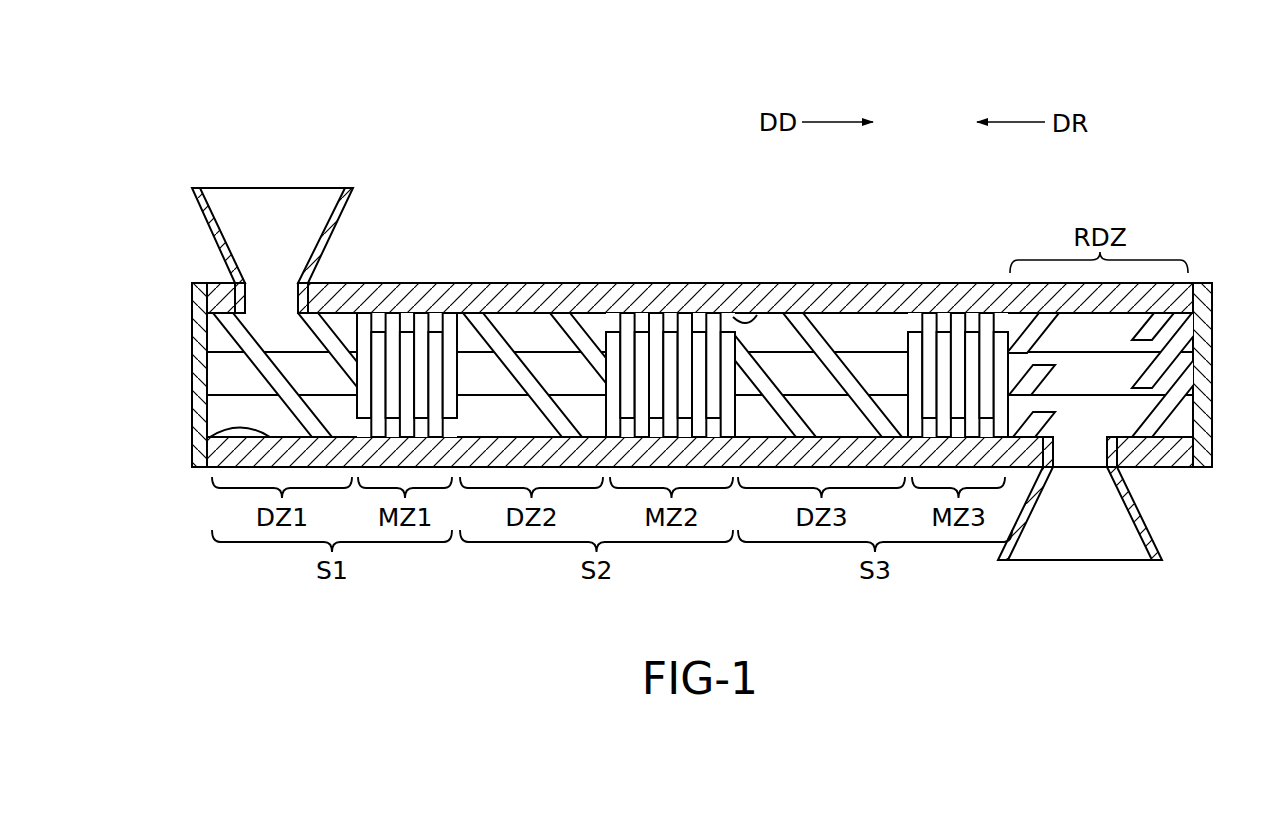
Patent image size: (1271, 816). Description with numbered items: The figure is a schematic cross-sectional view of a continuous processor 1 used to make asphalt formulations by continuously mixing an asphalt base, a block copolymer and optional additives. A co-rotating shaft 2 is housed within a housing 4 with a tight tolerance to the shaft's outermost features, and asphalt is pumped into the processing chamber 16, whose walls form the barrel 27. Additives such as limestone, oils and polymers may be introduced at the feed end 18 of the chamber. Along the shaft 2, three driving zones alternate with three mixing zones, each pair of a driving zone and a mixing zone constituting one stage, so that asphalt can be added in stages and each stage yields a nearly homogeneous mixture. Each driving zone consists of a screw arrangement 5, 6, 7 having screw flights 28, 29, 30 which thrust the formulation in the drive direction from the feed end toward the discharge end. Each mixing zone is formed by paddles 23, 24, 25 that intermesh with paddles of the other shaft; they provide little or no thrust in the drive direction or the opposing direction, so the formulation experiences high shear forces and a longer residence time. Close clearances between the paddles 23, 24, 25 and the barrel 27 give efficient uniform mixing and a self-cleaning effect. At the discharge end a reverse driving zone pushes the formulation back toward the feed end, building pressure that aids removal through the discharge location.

The continuous processor 1 is at (634, 188).
The co-rotating shaft 2 is at (221, 371).
The housing 4 is at (452, 292).
The screw arrangement 5 is at (300, 363).
The screw arrangement 6 is at (550, 372).
The screw arrangement 7 is at (798, 373).
The processing chamber 16 is at (235, 410).
The feed end 18 is at (257, 210).
The paddles 23 is at (420, 363).
The paddles 24 is at (683, 363).
The paddles 25 is at (958, 363).
The processing chamber walls (barrel) 27 is at (247, 428).
The screw flights 28 is at (290, 398).
The screw flights 29 is at (488, 333).
The screw flights 30 is at (820, 345).